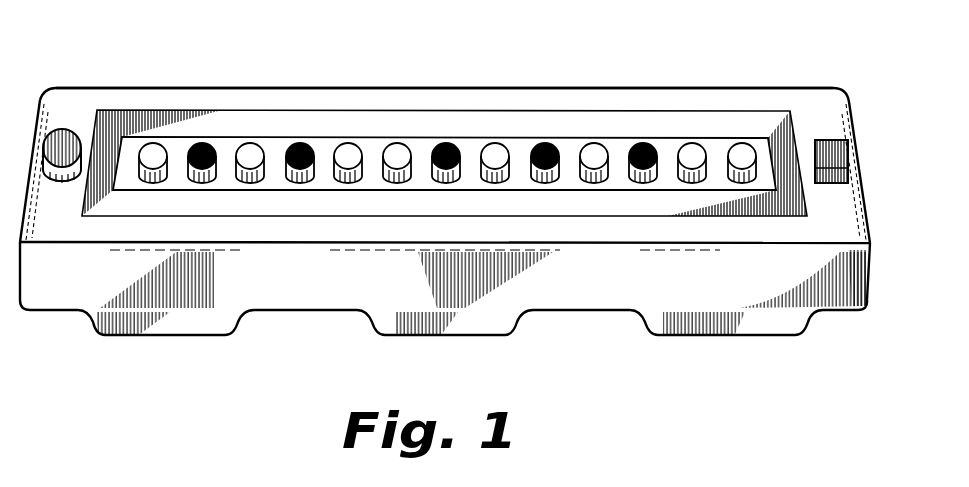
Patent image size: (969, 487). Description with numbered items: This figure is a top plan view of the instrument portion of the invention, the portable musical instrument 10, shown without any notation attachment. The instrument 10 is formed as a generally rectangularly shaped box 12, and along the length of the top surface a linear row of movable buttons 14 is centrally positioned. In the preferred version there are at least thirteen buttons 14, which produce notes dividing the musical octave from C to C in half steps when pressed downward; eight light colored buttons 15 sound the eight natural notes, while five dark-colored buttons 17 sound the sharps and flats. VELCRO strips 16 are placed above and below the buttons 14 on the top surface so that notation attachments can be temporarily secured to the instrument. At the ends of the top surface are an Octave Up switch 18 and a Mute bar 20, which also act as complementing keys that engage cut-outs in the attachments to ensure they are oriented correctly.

The musical instrument 10 is at (745, 64).
The rectangularly shaped box 12 is at (406, 87).
The movable buttons 14 is at (340, 147).
The light colored buttons 15 is at (501, 152).
The VELCRO strips 16 is at (497, 198).
The dark-colored buttons 17 is at (652, 147).
The Octave Up switch 18 is at (66, 128).
The Mute bar 20 is at (838, 139).